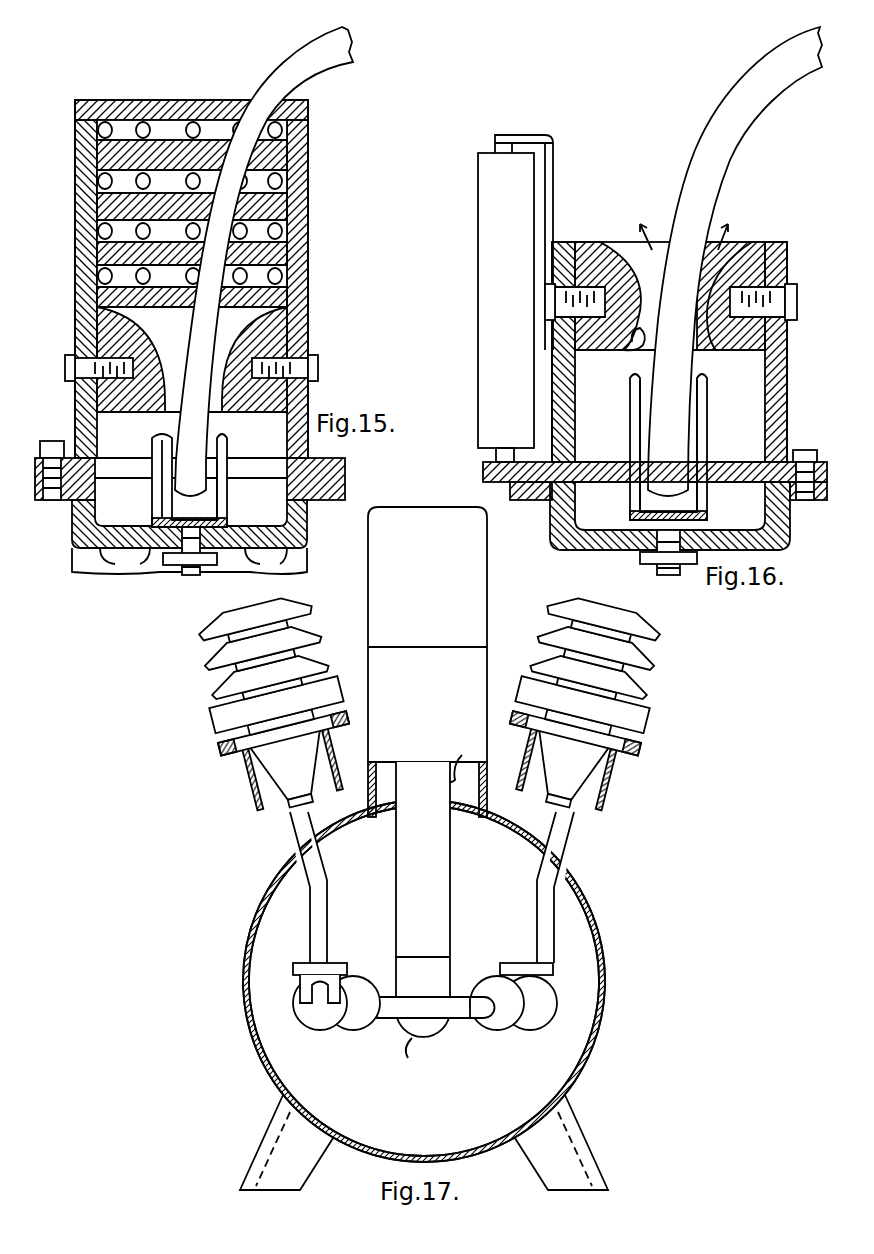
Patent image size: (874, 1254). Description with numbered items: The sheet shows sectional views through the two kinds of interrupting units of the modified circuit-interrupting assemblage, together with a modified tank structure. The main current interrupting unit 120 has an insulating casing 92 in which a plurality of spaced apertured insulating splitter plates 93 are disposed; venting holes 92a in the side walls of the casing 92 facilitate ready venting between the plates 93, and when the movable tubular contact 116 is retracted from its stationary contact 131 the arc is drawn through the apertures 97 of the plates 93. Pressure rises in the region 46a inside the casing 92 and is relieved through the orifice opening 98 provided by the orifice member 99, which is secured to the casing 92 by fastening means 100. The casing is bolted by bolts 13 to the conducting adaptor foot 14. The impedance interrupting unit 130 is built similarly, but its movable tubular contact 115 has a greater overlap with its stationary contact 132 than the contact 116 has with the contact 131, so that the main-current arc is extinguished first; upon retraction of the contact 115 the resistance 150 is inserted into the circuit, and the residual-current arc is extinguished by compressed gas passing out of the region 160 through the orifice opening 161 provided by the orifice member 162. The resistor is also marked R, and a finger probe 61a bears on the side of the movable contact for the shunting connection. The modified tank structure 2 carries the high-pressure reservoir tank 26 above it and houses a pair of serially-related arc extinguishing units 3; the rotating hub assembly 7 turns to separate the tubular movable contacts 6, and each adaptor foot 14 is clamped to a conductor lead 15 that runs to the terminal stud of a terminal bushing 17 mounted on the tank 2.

In FIG. 15, the main current interrupting unit 120 is at (351, 279).
In FIG. 15, the insulating casing 92 is at (310, 312).
In FIG. 15, the venting holes 92a is at (157, 104).
In FIG. 15, the insulating splitter plates 93 is at (296, 228).
In FIG. 15, the apertures 97 is at (255, 160).
In FIG. 15, the orifice opening 98 is at (165, 414).
In FIG. 15, the orifice member 99 is at (244, 414).
In FIG. 15, the fastening means 100 is at (314, 352).
In FIG. 15, the region 46a is at (137, 512).
In FIG. 15, the bolts 13 is at (52, 441).
In FIG. 16, the bolts 13 is at (797, 450).
In FIG. 15, the adaptor foot 14 is at (302, 520).
In FIG. 16, the adaptor foot 14 is at (786, 520).
In FIG. 17, the adaptor foot 14 is at (553, 972).
In FIG. 15, the stationary contact 131 is at (158, 452).
In FIG. 15, the rotatable tubular contact 116 is at (205, 444).
In FIG. 16, the resistance 150 is at (477, 360).
In FIG. 16, the resistor R is at (478, 217).
In FIG. 16, the impedance interrupting unit 130 is at (823, 354).
In FIG. 16, the orifice opening 161 is at (628, 240).
In FIG. 16, the orifice member 162 is at (751, 242).
In FIG. 16, the loop 61a is at (634, 346).
In FIG. 16, the region 160 is at (753, 404).
In FIG. 16, the stationary contact 132 is at (630, 416).
In FIG. 16, the rotatable tubular contact 115 is at (727, 150).
In FIG. 17, the tank structure 2 is at (600, 977).
In FIG. 17, the high-pressure reservoir tank 26 is at (483, 662).
In FIG. 17, the hub assembly 7 is at (450, 924).
In FIG. 17, the tubular movable contact 6 is at (391, 988).
In FIG. 17, the arc extinguishing unit 3 is at (343, 1028).
In FIG. 17, the conductor lead 15 is at (328, 920).
In FIG. 17, the terminal bushing 17 is at (212, 634).